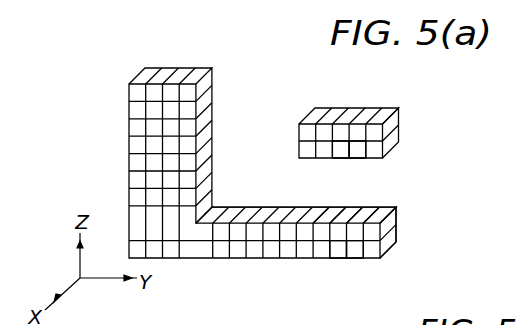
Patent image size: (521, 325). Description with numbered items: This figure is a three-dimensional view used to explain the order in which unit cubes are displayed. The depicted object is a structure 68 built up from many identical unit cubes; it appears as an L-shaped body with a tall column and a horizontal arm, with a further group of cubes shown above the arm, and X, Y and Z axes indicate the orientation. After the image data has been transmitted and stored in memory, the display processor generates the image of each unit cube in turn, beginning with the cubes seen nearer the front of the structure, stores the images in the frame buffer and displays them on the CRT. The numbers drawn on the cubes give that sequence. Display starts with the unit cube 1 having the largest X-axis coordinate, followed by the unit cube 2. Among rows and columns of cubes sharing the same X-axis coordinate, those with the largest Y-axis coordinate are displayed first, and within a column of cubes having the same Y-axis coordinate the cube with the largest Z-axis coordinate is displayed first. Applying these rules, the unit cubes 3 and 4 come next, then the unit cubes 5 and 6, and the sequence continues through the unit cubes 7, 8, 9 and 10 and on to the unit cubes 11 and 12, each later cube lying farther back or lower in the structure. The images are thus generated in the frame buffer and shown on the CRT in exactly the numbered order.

The unit cube 1 is at (400, 118).
The unit cube 2 is at (398, 137).
The unit cube 3 is at (398, 220).
The unit cube 4 is at (398, 237).
The unit cube 5 is at (373, 108).
The unit cube 6 is at (355, 150).
The unit cube 7 is at (370, 207).
The unit cube 8 is at (356, 255).
The unit cube 9 is at (353, 110).
The unit cube 10 is at (338, 148).
The unit cube 11 is at (335, 207).
The unit cube 12 is at (339, 254).
The L-shaped object 68 is at (137, 250).